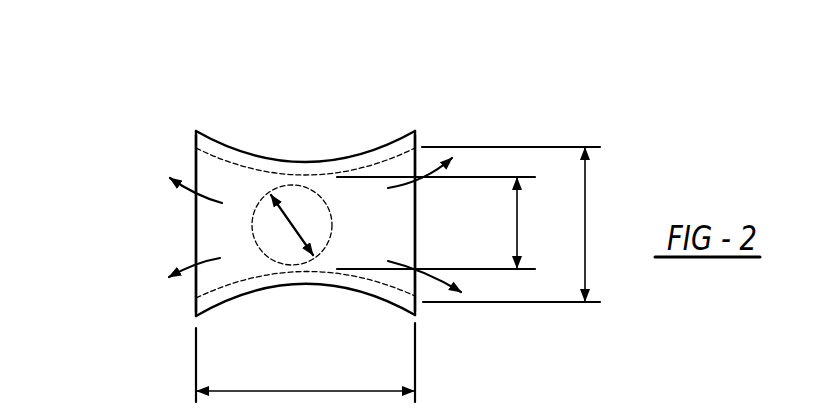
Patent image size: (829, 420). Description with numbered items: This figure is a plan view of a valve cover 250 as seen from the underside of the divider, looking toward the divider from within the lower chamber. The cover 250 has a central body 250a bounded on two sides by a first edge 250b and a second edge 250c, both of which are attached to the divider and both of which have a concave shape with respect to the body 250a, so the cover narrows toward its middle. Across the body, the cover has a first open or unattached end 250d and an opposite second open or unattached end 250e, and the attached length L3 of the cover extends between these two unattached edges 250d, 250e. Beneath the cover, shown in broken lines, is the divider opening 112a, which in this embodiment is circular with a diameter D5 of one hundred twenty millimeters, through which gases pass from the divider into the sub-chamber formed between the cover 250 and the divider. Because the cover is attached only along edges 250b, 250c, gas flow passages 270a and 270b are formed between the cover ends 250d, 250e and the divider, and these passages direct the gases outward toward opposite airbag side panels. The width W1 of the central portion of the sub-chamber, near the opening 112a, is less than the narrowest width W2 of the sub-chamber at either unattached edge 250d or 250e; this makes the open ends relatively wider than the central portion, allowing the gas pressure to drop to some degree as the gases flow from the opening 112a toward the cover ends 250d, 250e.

The valve cover 250 is at (196, 312).
The body 250a is at (239, 205).
The first edge 250b is at (273, 158).
The second edge 250c is at (273, 286).
The first unattached end 250d is at (196, 228).
The second unattached end 250e is at (415, 208).
The opening 112a is at (300, 183).
The first gas flow passage 270a is at (196, 165).
The second gas flow passage 270b is at (415, 155).
The opening diameter D5 is at (287, 225).
The sub-chamber central width W1 is at (442, 223).
The sub-chamber end width W2 is at (519, 224).
The attached length L3 is at (305, 362).